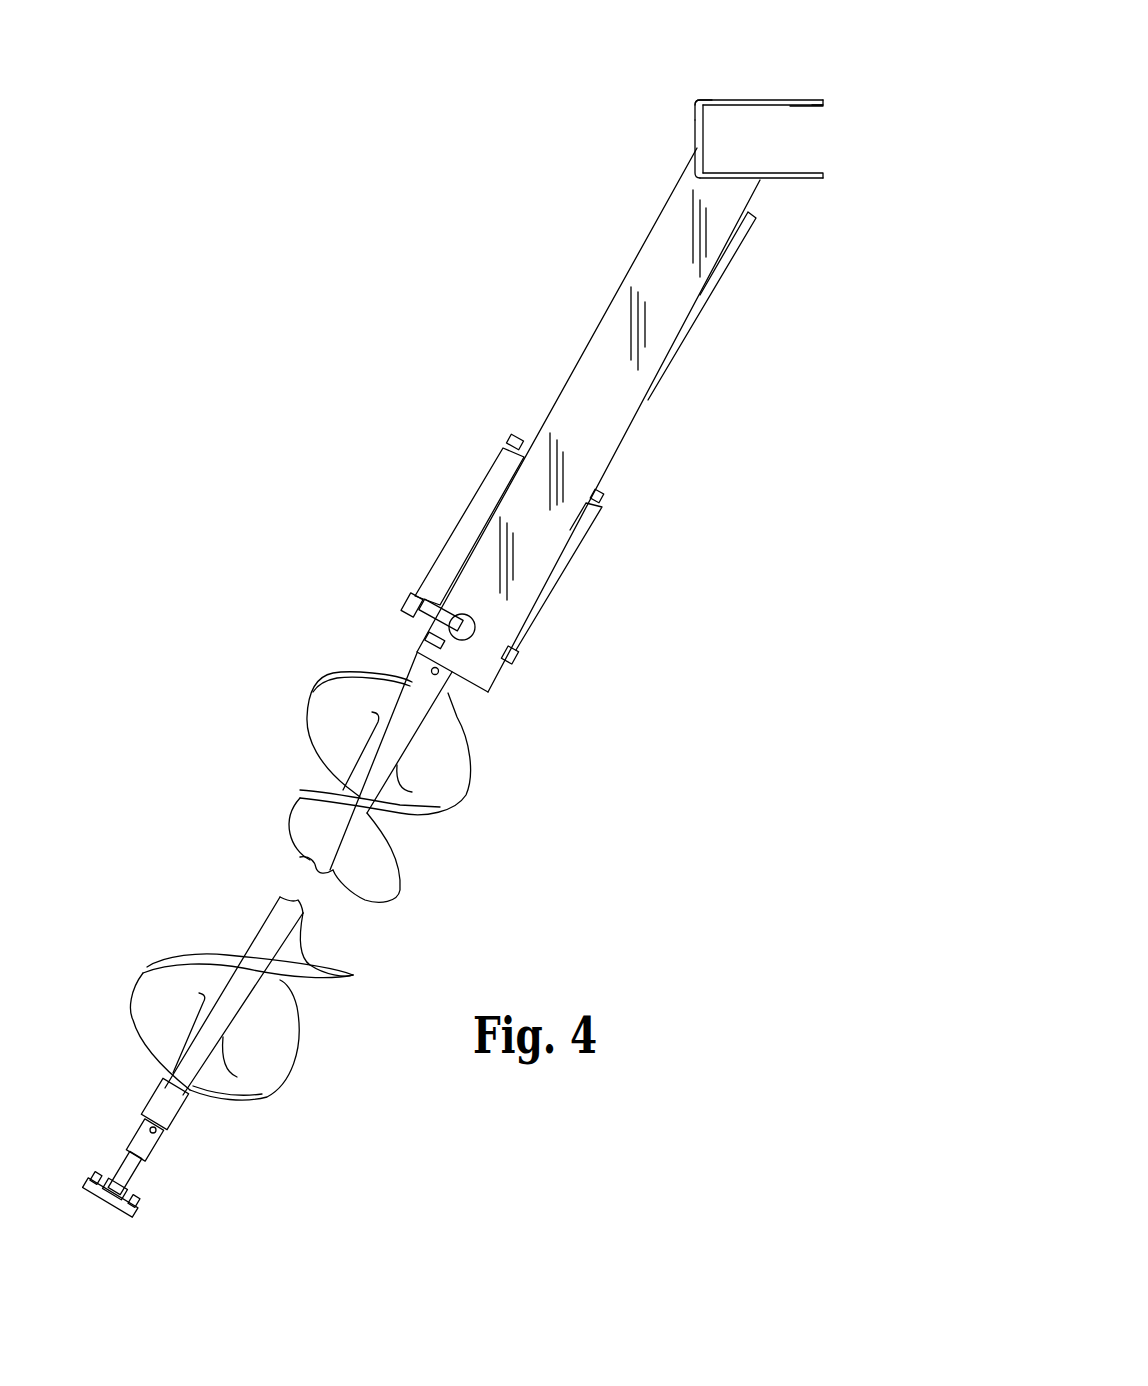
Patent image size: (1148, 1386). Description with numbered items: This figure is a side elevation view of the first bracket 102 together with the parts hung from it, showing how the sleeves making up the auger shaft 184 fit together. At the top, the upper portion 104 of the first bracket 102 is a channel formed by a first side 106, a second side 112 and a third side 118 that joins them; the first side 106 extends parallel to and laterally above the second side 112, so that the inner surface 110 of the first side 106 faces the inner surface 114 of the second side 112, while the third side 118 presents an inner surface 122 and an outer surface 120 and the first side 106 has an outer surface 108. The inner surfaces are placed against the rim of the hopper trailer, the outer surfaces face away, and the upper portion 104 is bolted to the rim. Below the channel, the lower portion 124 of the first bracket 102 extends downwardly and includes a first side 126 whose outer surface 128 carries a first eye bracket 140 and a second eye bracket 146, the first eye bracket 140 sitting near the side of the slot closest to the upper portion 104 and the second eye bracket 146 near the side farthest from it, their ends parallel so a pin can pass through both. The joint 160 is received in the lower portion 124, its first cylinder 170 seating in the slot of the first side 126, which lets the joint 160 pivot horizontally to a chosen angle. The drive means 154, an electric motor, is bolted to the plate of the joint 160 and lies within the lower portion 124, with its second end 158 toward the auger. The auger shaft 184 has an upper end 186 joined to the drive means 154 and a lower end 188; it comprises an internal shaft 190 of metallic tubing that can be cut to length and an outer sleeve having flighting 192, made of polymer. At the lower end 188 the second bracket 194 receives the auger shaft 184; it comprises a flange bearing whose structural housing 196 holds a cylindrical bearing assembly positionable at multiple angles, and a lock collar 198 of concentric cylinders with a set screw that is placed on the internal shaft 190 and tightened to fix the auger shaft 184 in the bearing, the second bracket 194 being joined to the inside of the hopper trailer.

The first bracket 102 is at (742, 128).
The upper portion 104 is at (727, 100).
The first side 106 is at (778, 104).
The outer surface 108 is at (813, 101).
The inner surface 110 is at (810, 109).
The outer surface 120 is at (694, 130).
The third side 118 is at (697, 150).
The inner surface 122 is at (703, 133).
The inner surface 114 is at (804, 179).
The second side 112 is at (787, 181).
The lower portion 124 is at (649, 242).
The first side 126 is at (617, 425).
The second end 158 is at (738, 247).
The drive means 154 is at (478, 500).
The outer surface 128 is at (507, 628).
The first eye bracket 140 is at (464, 607).
The joint 160 is at (410, 600).
The second eye bracket 146 is at (428, 639).
The first cylinder 170 is at (464, 641).
The upper end 186 is at (439, 682).
The auger shaft 184 is at (263, 867).
The outer sleeve having flighting 192 is at (393, 879).
The lower end 188 is at (170, 1083).
The internal shaft 190 is at (160, 1143).
The second bracket 194 is at (133, 1217).
The structural housing 196 is at (98, 1188).
The lock collar 198 is at (108, 1175).